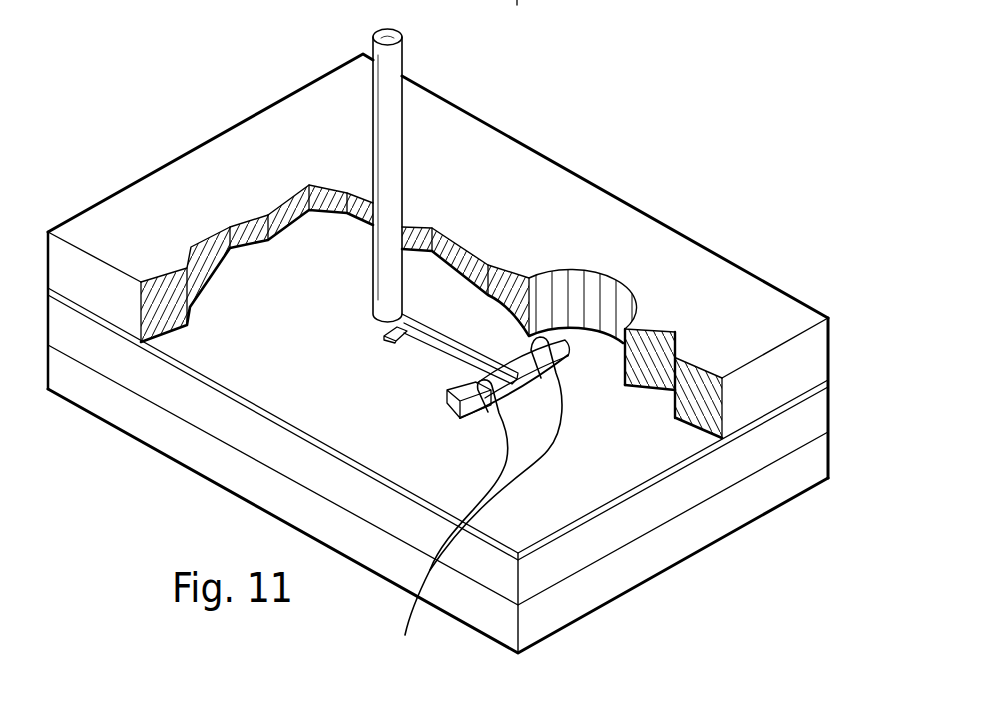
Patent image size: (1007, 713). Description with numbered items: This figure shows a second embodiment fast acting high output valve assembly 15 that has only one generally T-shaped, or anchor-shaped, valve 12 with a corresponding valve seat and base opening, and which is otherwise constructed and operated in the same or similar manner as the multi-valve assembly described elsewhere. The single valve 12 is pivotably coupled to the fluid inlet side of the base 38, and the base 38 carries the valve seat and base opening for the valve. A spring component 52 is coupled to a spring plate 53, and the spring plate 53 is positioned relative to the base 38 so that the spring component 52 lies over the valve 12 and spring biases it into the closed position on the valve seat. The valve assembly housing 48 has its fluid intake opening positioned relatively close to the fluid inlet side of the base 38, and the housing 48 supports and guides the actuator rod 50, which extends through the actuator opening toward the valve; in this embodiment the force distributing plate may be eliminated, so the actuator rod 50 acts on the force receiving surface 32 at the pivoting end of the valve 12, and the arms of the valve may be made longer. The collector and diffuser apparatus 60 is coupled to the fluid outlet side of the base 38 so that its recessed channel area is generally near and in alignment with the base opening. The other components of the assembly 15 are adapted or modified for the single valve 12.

The valve assembly 15 is at (553, 130).
The actuator rod 50 is at (392, 68).
The generally T-shaped valve 12 is at (549, 331).
The valve assembly housing 48 is at (783, 310).
The spring plate 53 is at (828, 382).
The base 38 is at (823, 405).
The collector and diffuser apparatus 60 is at (823, 453).
The force receiving surface 32 is at (390, 325).
The spring component 52 is at (477, 499).